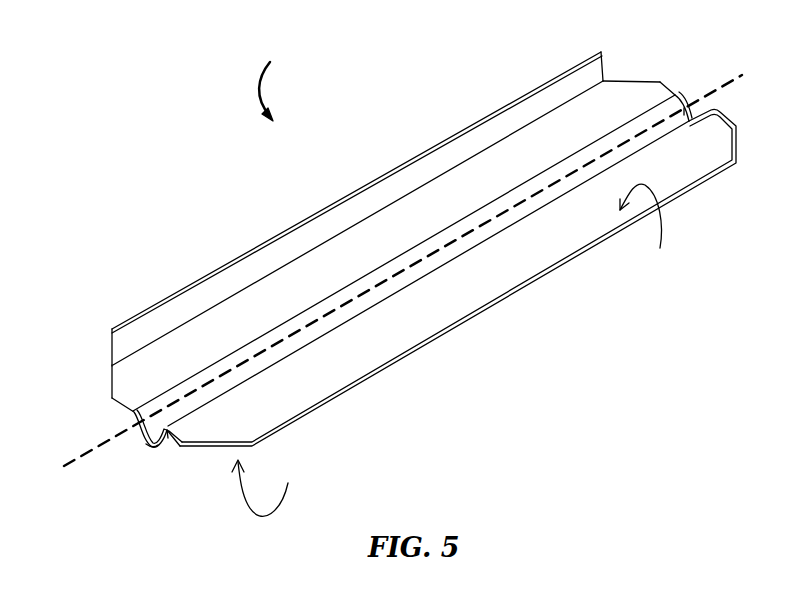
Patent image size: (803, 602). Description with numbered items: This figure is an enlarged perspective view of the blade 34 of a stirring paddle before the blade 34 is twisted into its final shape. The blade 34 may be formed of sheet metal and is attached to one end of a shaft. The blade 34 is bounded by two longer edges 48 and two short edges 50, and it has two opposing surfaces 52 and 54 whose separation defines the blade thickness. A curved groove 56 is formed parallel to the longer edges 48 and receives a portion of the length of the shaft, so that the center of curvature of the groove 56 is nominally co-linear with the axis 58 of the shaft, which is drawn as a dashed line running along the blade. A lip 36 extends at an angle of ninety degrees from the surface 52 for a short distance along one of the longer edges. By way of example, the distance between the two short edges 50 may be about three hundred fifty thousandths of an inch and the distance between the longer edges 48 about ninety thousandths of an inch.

The blade 34 is at (273, 81).
The lip 36 is at (473, 124).
The longer edges 48 is at (510, 291).
The short edges 50 is at (128, 410).
The surface 52 is at (648, 229).
The surface 54 is at (268, 488).
The curved groove 56 is at (158, 448).
The axis 58 is at (82, 462).